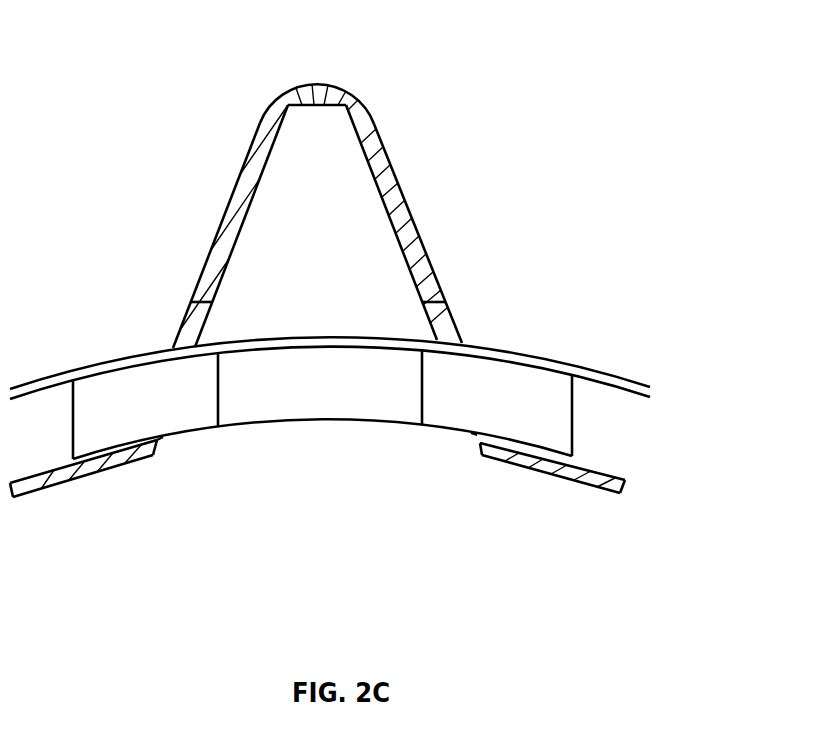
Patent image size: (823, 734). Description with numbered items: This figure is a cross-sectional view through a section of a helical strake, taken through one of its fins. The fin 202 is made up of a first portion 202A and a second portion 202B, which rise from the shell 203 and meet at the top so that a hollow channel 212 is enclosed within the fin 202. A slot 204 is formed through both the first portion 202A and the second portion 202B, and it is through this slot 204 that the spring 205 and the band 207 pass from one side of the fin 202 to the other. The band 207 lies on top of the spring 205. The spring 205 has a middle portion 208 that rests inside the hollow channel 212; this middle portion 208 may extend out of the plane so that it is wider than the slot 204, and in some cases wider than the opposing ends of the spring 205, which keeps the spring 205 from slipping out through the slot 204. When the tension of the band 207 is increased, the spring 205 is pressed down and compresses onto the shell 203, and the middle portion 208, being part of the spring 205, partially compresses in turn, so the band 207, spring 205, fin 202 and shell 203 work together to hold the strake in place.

The fin 202 is at (307, 190).
The first portion 202A is at (417, 207).
The second portion 202B is at (212, 225).
The hollow channel 212 is at (322, 215).
The band 207 is at (518, 352).
The spring 205 is at (580, 414).
The middle portion 208 is at (326, 393).
The slot 204 is at (165, 440).
The shell 203 is at (520, 470).